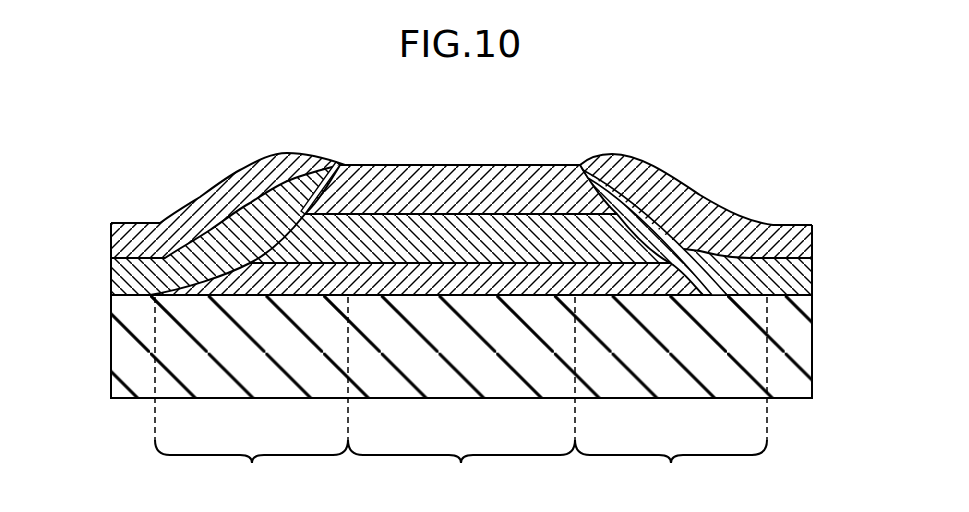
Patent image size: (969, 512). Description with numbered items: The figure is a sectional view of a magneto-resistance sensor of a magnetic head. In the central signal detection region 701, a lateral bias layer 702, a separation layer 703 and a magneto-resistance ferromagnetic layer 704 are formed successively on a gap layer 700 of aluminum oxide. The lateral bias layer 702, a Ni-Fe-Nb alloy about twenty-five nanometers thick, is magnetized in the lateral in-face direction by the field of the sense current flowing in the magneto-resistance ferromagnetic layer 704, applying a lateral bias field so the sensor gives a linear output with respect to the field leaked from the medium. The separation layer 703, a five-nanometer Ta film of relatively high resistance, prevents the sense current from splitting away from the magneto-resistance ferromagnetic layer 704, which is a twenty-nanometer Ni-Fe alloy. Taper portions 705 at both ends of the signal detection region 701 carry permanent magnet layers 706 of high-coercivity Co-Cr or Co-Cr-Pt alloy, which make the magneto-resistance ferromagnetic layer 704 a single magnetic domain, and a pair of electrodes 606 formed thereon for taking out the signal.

The gap layer 700 is at (800, 338).
The signal detection region 701 is at (461, 472).
The lateral bias layer 702 is at (514, 270).
The separation layer 703 is at (438, 222).
The magneto-resistance ferromagnetic layer 704 is at (375, 178).
The taper portions 705 is at (461, 401).
The permanent magnet layers 706 is at (172, 260).
The electrodes 606 is at (250, 183).